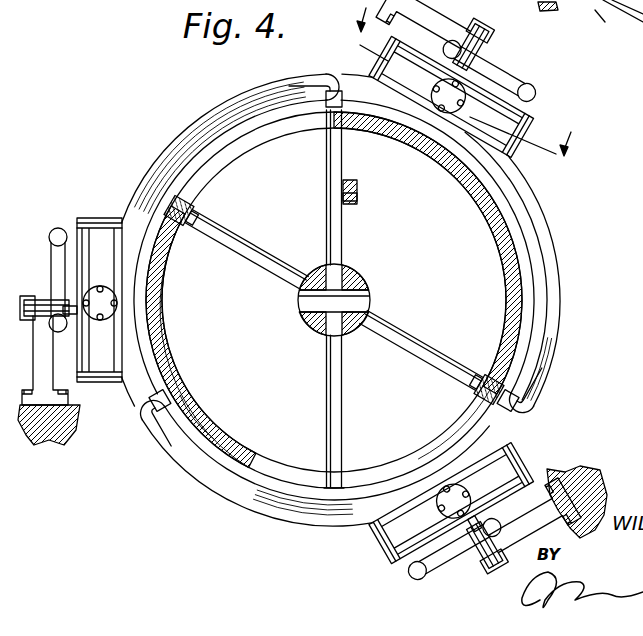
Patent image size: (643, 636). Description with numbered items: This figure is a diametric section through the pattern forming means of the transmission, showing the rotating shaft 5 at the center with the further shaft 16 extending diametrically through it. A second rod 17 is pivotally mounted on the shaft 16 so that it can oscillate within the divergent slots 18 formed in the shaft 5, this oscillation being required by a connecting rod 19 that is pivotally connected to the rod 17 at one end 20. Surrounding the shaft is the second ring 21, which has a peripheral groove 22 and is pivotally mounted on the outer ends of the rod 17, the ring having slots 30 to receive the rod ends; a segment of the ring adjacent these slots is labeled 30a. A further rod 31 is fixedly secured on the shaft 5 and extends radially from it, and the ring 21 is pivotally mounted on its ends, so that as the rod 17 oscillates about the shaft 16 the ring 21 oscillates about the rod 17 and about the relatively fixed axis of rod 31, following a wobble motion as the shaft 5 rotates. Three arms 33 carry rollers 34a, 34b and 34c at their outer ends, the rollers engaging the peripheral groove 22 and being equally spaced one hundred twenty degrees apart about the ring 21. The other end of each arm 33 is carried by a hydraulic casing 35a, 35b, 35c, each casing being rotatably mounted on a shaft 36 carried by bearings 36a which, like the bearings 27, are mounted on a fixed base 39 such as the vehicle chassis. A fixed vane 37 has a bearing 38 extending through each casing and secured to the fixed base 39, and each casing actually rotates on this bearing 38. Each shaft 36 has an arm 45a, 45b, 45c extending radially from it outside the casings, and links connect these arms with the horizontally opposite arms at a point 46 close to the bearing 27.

The shaft 5 is at (359, 276).
The further shaft 16 is at (302, 303).
The second rod 17 is at (332, 384).
The divergent slots 18 is at (341, 268).
The connecting rod 19 is at (354, 200).
The end 20 is at (358, 192).
The second ring 21 is at (205, 415).
The peripheral groove 22 is at (218, 458).
The bearings 27 is at (600, 12).
The slots 30 is at (373, 477).
The inner ring segment 30a is at (285, 123).
The further rod 31 is at (417, 351).
The arms 33 is at (145, 181).
The roller 34a is at (509, 412).
The roller 34b is at (157, 400).
The roller 34c is at (346, 90).
The hydraulic casing 35a is at (527, 127).
The hydraulic casing 35b is at (394, 551).
The hydraulic casing 35c is at (97, 230).
The shaft 36 is at (57, 305).
The bearings 36a is at (33, 293).
The fixed vane 37 is at (473, 563).
The bearing 38 is at (75, 318).
The fixed base 39 is at (56, 440).
The arm 45a is at (512, 78).
The arm 45b is at (435, 578).
The arm 45c is at (56, 230).
The point 46 is at (556, 8).